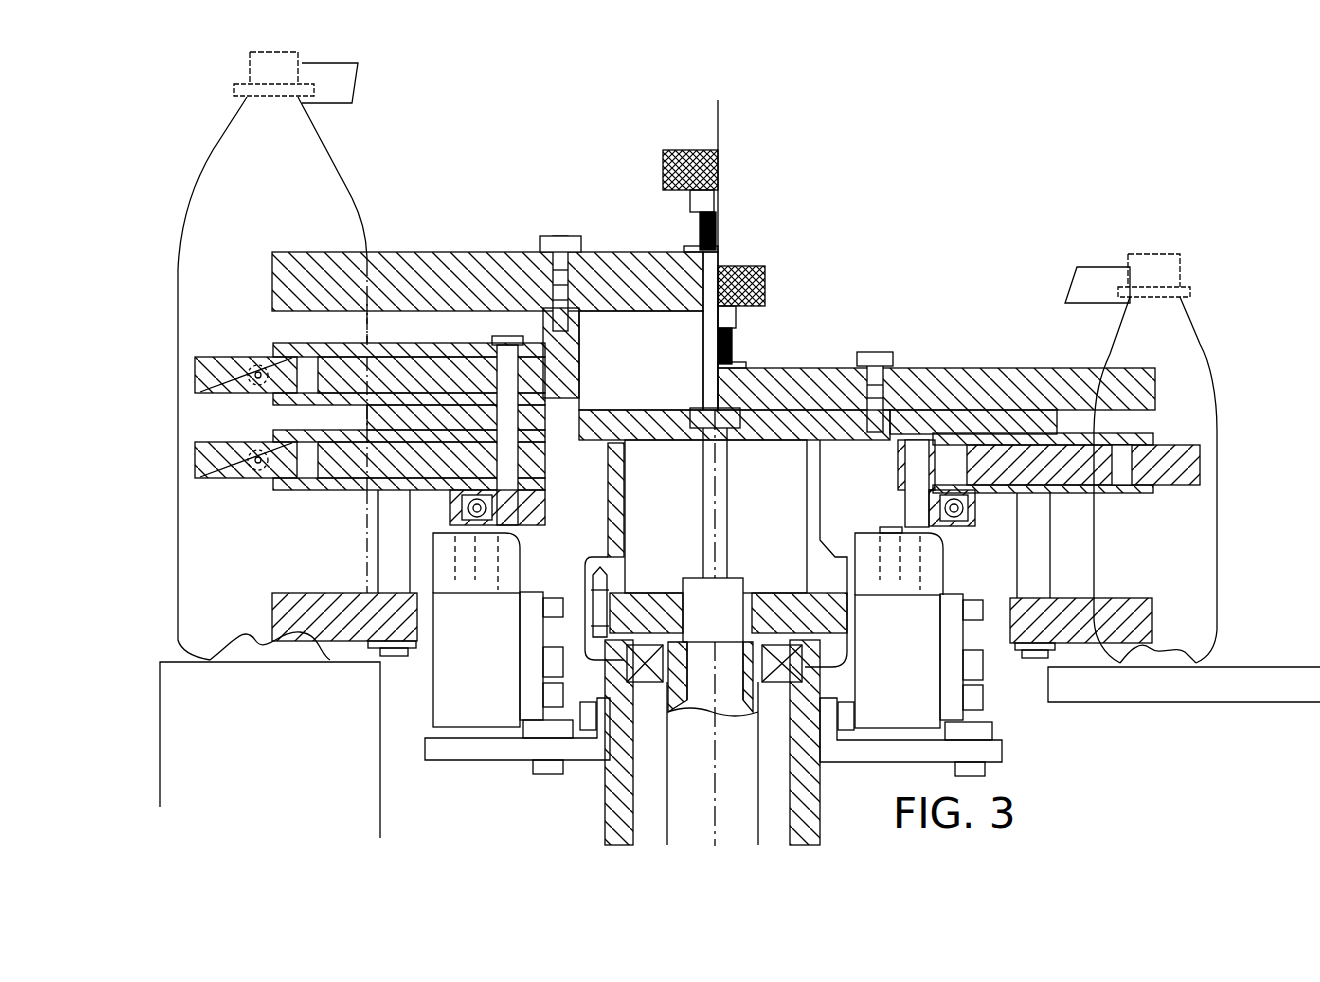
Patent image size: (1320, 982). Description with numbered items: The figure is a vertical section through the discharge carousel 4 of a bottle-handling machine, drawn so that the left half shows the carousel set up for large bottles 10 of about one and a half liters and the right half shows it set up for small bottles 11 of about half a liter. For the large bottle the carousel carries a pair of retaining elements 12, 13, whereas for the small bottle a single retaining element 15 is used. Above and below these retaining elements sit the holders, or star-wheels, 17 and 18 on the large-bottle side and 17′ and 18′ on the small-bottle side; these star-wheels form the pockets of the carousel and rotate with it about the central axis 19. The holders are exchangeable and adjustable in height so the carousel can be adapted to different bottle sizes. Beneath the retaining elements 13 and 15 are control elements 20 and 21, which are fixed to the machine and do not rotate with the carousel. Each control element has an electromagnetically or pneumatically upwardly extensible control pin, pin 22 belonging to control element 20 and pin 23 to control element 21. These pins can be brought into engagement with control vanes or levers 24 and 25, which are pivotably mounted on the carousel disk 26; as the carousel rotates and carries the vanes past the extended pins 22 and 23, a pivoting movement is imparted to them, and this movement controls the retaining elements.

The discharge carousel 4 is at (646, 243).
The large bottle 10 is at (326, 178).
The small bottle 11 is at (1124, 330).
The retaining element 12 is at (250, 356).
The retaining element 13 is at (259, 478).
The retaining element 15 is at (1164, 486).
The upper holder (star-wheel) 17 is at (380, 254).
The upper holder (star-wheel) 17′ is at (1090, 368).
The lower holder (star-wheel) 18 is at (345, 593).
The lower holder (star-wheel) 18′ is at (1114, 598).
The central axis 19 is at (710, 512).
The control element 20 is at (445, 693).
The control element 21 is at (925, 700).
The control pin 22 is at (450, 528).
The control pin 23 is at (890, 525).
The control vane (lever) 24 is at (546, 494).
The control vane (lever) 25 is at (905, 500).
The carousel disk 26 is at (613, 413).